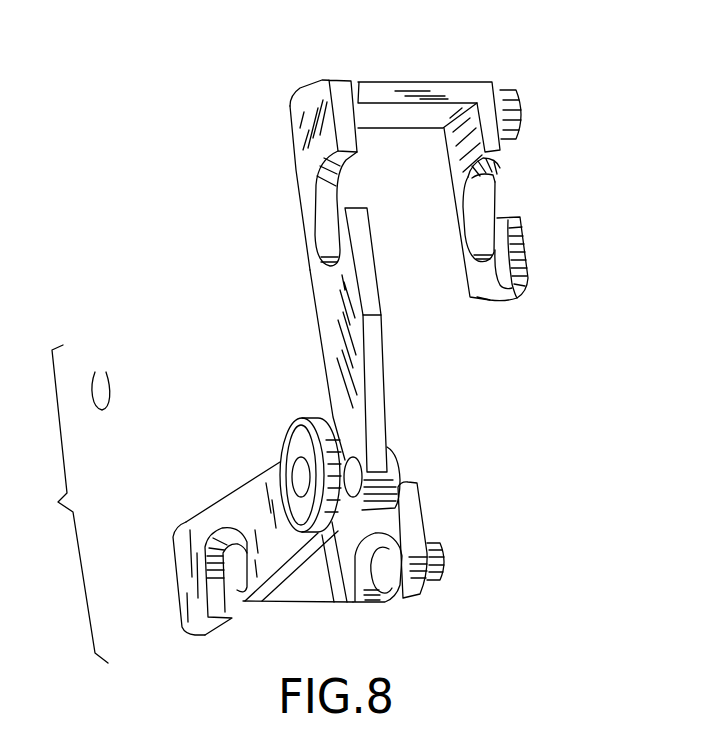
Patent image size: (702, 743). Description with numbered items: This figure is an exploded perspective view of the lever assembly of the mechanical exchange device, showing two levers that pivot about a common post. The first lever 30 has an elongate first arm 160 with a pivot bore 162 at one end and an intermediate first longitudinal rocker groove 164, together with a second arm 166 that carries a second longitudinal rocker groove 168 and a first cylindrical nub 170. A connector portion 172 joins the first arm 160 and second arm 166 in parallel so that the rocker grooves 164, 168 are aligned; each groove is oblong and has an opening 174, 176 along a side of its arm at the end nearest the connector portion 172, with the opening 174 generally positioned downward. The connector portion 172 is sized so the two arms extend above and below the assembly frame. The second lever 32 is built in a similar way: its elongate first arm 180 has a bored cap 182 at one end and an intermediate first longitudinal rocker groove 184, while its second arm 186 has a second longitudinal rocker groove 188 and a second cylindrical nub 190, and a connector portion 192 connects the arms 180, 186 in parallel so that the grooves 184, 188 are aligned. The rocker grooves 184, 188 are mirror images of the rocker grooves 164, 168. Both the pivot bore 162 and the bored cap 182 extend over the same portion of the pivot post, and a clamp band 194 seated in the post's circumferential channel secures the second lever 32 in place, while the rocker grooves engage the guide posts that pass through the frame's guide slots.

The first lever 30 is at (298, 103).
The connector portion 172 is at (407, 90).
The first cylindrical nub 170 is at (516, 85).
The opening 174 is at (338, 170).
The first longitudinal rocker groove 164 is at (320, 212).
The opening 176 is at (497, 165).
The second longitudinal rocker groove 168 is at (484, 215).
The second arm 166 is at (448, 186).
The first arm 160 is at (315, 298).
The pivot bore 162 is at (364, 446).
The bored cap 182 is at (288, 448).
The second lever 32 is at (266, 480).
The first arm 180 is at (223, 502).
The first longitudinal rocker groove 184 is at (205, 565).
The second arm 186 is at (374, 524).
The second longitudinal rocker groove 188 is at (385, 560).
The second cylindrical nub 190 is at (448, 567).
The connector portion 192 is at (300, 597).
The clamp band 194 is at (111, 407).